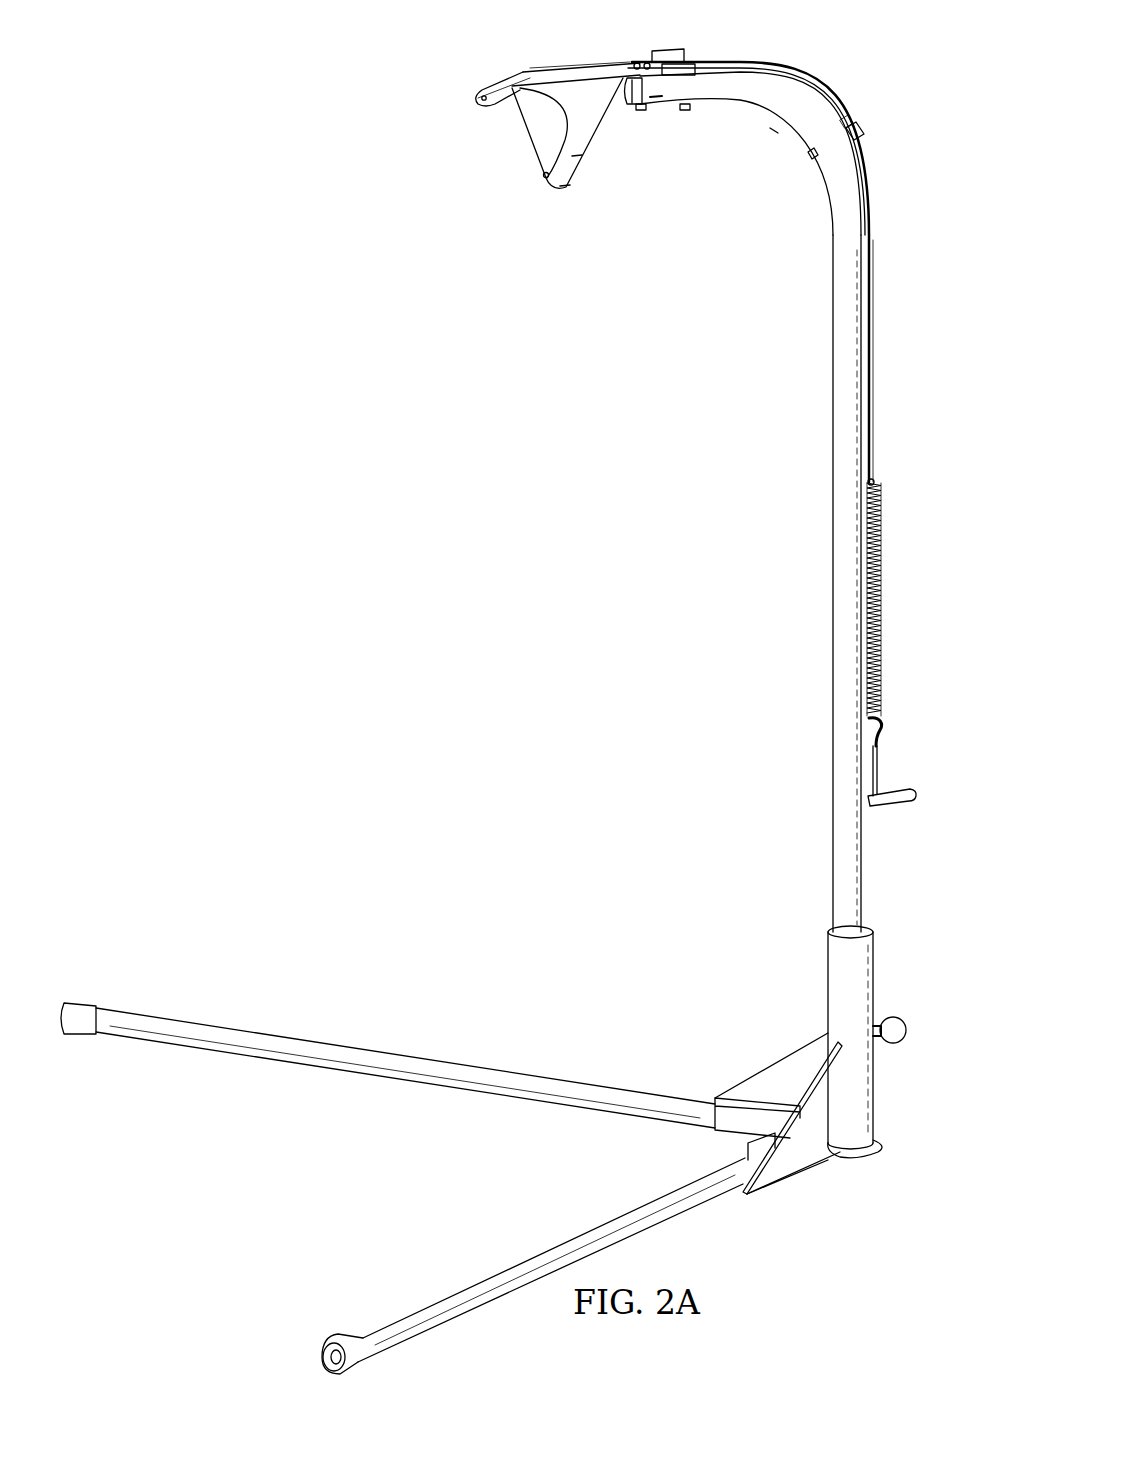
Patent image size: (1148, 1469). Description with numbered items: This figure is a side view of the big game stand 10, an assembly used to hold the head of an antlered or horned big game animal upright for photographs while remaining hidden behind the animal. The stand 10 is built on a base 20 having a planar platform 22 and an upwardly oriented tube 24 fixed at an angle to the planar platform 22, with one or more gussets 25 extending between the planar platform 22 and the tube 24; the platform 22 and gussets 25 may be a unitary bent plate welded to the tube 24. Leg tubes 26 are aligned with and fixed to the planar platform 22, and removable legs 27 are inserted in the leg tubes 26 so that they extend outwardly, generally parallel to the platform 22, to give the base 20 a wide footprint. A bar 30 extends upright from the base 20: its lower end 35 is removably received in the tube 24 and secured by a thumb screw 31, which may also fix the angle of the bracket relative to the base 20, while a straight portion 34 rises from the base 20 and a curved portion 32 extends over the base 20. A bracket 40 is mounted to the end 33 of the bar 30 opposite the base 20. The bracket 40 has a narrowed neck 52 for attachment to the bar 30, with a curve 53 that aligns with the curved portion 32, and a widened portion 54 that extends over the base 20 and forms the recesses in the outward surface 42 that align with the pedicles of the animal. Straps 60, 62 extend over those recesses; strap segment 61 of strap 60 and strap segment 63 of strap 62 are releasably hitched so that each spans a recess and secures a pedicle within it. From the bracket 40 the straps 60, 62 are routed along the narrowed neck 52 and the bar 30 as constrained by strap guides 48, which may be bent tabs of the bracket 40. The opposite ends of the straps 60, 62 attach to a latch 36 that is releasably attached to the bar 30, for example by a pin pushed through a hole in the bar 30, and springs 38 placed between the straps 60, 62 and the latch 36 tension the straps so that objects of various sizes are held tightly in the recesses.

The big game stand 10 is at (272, 158).
The base 20 is at (882, 976).
The planar platform 22 is at (700, 1136).
The upwardly oriented tube 24 is at (824, 960).
The gussets 25 is at (802, 1050).
The leg tubes 26 is at (752, 1098).
The removable legs 27 is at (340, 1043).
The bar 30 is at (820, 584).
The thumb screw 31 is at (896, 1050).
The curved portion 32 is at (777, 124).
The end 33 is at (628, 108).
The straight portion 34 is at (828, 774).
The end 35 is at (870, 1152).
The latch 36 is at (896, 806).
The springs 38 is at (885, 514).
The bracket 40 is at (577, 60).
The outward surface 42 is at (490, 90).
The strap guides 48 is at (672, 52).
The narrowed neck 52 is at (703, 62).
The curve 53 is at (768, 72).
The widened portion 54 is at (590, 136).
The strap 60 is at (540, 68).
The strap segment 61 is at (540, 168).
The strap 62 is at (600, 72).
The strap segment 63 is at (498, 108).